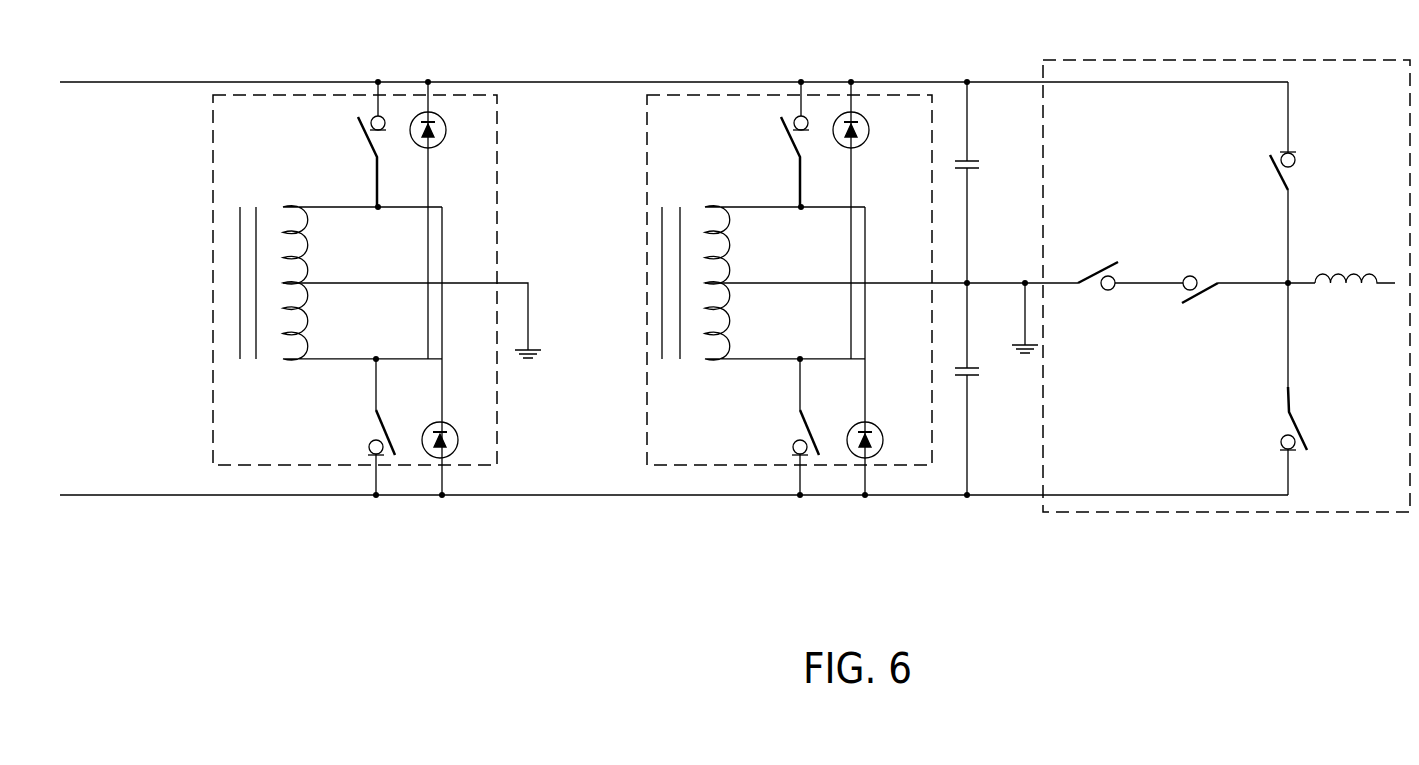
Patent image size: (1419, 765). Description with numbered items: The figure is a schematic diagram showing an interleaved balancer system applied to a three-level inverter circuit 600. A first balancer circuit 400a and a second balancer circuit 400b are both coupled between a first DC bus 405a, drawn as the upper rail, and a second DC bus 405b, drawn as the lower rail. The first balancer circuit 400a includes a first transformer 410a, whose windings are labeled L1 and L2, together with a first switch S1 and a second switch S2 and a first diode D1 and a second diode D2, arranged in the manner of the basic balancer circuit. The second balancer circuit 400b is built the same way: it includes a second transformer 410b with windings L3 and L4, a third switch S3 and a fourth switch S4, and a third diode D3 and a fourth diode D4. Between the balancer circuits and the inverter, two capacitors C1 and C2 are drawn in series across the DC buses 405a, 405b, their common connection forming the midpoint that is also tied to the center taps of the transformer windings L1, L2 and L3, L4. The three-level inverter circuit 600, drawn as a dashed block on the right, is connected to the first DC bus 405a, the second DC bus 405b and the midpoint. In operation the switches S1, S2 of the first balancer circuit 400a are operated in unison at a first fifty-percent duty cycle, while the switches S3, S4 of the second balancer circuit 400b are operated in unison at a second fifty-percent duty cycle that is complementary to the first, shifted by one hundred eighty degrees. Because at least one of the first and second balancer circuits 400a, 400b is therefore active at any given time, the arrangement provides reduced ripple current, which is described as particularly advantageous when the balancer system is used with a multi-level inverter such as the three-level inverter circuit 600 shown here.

The first balancer circuit 400a is at (329, 269).
The second balancer circuit 400b is at (737, 269).
The first DC bus 405a is at (563, 82).
The second DC bus 405b is at (767, 495).
The first transformer 410a is at (329, 240).
The second transformer 410b is at (704, 247).
The three-level inverter circuit 600 is at (1248, 60).
The first switch S1 is at (359, 144).
The second switch S2 is at (363, 427).
The third switch S3 is at (782, 144).
The fourth switch S4 is at (787, 427).
The first diode D1 is at (439, 220).
The second diode D2 is at (451, 351).
The third diode D3 is at (867, 220).
The fourth diode D4 is at (881, 351).
The winding L1 is at (322, 247).
The winding L2 is at (322, 322).
The winding L3 is at (745, 246).
The winding L4 is at (745, 321).
The capacitor C1 is at (981, 182).
The capacitor C2 is at (983, 389).